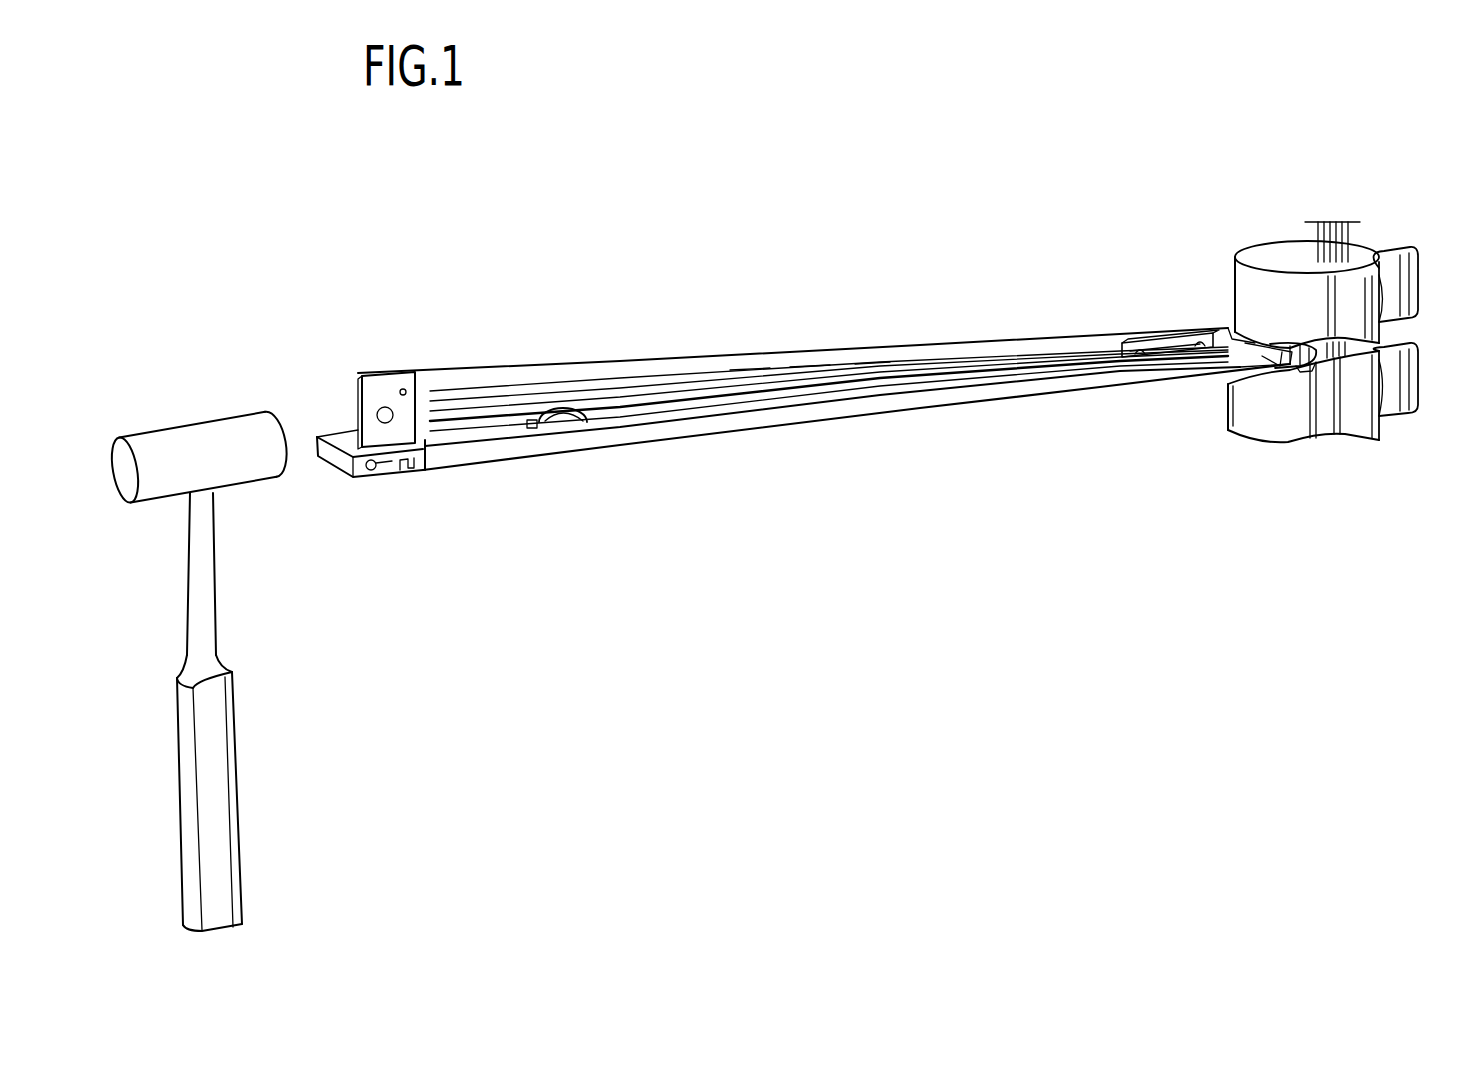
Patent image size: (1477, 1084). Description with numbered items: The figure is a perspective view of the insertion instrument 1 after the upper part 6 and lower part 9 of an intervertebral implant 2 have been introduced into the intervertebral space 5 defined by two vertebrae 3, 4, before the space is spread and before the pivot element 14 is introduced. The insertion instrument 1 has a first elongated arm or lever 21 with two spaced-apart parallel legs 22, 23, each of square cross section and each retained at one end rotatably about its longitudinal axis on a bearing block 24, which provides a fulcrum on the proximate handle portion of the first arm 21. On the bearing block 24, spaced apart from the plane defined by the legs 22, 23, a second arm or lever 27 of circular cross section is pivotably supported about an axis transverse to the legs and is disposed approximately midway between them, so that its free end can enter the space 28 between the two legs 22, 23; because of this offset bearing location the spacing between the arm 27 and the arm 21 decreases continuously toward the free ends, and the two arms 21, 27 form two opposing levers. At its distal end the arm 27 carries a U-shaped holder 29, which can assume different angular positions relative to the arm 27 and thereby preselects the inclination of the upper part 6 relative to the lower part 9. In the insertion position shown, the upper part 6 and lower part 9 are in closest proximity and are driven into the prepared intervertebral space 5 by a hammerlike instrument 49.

The insertion instrument 1 is at (420, 328).
The intervertebral implant 2 is at (1307, 378).
The vertebra 3 is at (1247, 262).
The vertebra 4 is at (1253, 412).
The intervertebral space 5 is at (1354, 366).
The upper part 6 is at (1297, 343).
The lower part 9 is at (1288, 378).
The pivot element 14 is at (569, 402).
The first arm 21 is at (617, 450).
The leg 22 is at (543, 448).
The leg 23 is at (470, 412).
The bearing block 24 is at (372, 393).
The second arm 27 is at (679, 354).
The space 28 is at (513, 397).
The U-shaped holder 29 is at (1128, 326).
The hammerlike instrument 49 is at (167, 455).